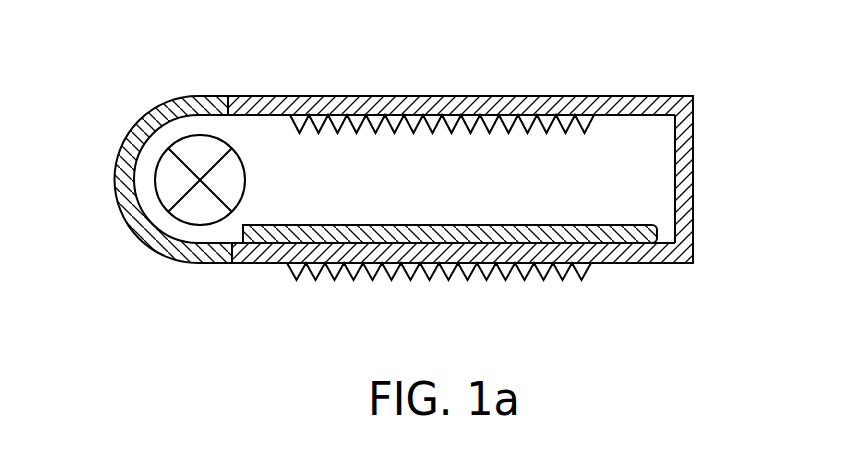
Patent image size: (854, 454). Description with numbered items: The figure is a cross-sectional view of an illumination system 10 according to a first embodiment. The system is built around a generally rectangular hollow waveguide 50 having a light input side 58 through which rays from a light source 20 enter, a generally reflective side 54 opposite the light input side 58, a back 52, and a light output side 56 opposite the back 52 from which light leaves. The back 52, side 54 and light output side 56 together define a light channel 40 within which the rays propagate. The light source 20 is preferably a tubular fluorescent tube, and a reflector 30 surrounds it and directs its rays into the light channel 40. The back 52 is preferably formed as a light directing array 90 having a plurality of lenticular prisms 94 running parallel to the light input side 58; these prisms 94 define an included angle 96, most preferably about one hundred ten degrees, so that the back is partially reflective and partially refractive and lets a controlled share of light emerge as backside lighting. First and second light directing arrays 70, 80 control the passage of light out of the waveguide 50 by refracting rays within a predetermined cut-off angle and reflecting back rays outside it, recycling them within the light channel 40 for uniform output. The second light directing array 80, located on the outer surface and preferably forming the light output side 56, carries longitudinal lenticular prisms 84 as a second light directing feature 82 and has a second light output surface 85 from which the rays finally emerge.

The illumination system 10 is at (133, 26).
The light source 20 is at (188, 210).
The reflector 30 is at (118, 208).
The light channel 40 is at (423, 184).
The hollow waveguide 50 is at (494, 186).
The back 52 is at (430, 96).
The reflective side 54 is at (694, 175).
The light output side 56 is at (450, 268).
The light input side 58 is at (250, 135).
The first light directing array 70 is at (311, 227).
The second light directing array 80 is at (330, 265).
The second light directing feature 82 is at (553, 286).
The lenticular prisms 84 is at (380, 276).
The second light output surface 85 is at (285, 283).
The light directing array 90 is at (590, 127).
The lenticular prisms 94 is at (294, 134).
The included angle 96 is at (362, 120).